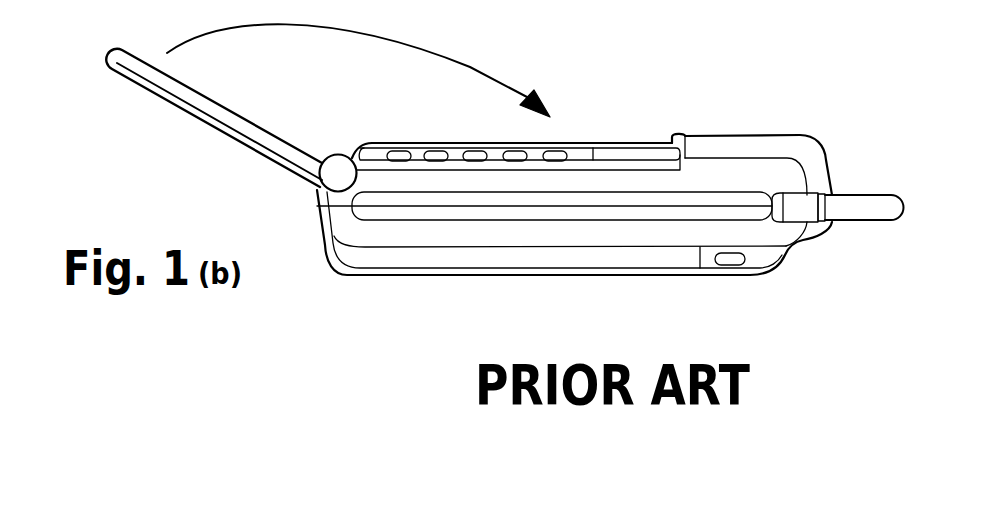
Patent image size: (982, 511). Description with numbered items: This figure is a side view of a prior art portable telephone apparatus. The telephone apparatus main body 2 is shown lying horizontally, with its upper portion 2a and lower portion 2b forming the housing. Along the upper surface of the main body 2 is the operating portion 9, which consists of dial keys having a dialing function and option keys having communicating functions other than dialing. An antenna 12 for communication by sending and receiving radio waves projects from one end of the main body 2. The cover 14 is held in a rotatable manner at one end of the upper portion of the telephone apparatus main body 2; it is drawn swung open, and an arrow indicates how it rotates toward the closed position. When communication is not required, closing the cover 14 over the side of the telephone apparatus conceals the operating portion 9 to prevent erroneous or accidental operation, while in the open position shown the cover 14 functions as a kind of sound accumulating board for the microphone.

The cover 14 is at (213, 102).
The operating portion 9 is at (457, 147).
The upper case 2a is at (622, 156).
The telephone apparatus main body 2 is at (680, 152).
The antenna 12 is at (862, 200).
The lower case 2b is at (627, 238).